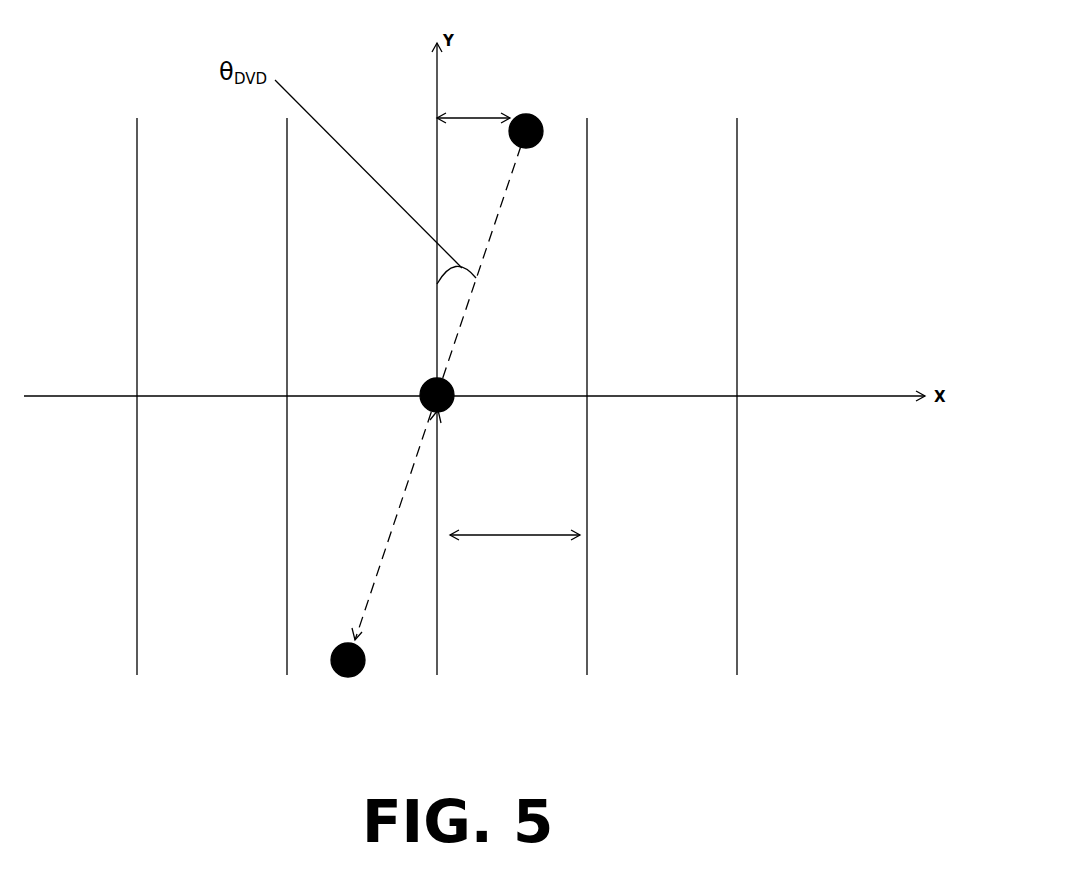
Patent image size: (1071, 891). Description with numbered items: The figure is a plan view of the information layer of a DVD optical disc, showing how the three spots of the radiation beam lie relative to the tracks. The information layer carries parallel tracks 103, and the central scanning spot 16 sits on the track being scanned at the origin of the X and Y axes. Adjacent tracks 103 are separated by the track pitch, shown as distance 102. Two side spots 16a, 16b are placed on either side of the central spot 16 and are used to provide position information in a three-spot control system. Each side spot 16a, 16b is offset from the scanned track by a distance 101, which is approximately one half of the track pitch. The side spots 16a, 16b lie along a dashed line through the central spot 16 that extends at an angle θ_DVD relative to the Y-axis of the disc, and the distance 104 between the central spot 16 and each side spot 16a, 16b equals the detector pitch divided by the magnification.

The first scanning spot 16 is at (452, 385).
The side spot 16a is at (563, 116).
The side spot 16b is at (369, 601).
The distance 101 is at (478, 117).
The distance 102 is at (518, 535).
The tracks 103 is at (137, 662).
The distance 104 is at (390, 543).